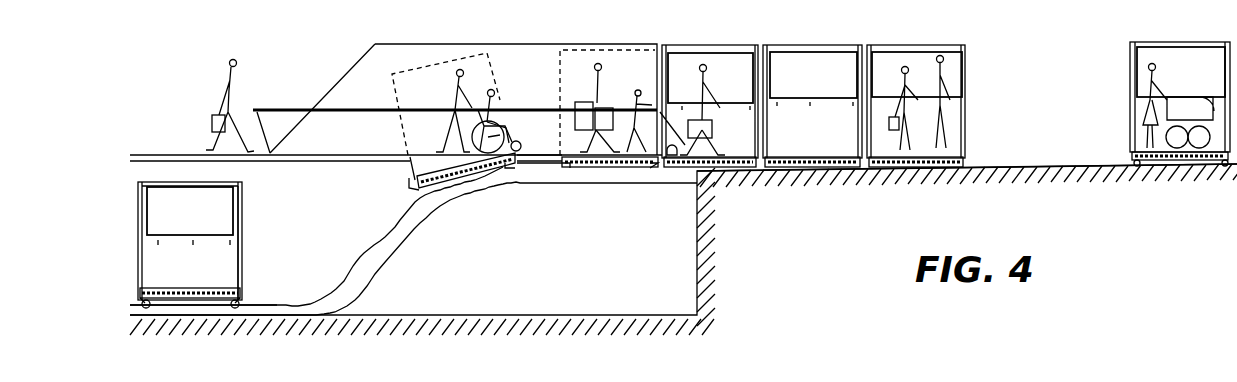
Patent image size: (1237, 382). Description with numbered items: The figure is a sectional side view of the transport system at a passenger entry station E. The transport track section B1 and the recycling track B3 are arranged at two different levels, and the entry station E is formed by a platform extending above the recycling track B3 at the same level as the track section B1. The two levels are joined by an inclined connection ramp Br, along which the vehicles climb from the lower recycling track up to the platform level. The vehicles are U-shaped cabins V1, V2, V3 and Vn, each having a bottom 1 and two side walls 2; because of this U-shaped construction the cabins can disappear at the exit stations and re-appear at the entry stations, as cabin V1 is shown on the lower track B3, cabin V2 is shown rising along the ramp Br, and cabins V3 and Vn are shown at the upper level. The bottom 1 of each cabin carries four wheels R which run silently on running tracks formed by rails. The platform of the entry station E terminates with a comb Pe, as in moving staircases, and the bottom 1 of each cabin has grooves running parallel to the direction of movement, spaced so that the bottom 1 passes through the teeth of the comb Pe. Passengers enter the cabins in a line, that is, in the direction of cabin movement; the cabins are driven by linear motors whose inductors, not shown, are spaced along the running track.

The U-shaped cabin V1 is at (242, 211).
The U-shaped cabin V2 is at (460, 162).
The U-shaped cabin V3 is at (603, 157).
The U-shaped cabin Vn is at (1130, 73).
The passenger entry station E is at (547, 158).
The comb Pe is at (673, 157).
The track section B1 is at (1020, 165).
The recycling track B3 is at (188, 310).
The inclined connection ramp Br is at (388, 233).
The wheels R is at (236, 308).
The bottom 1 is at (183, 290).
The side walls 2 is at (222, 258).